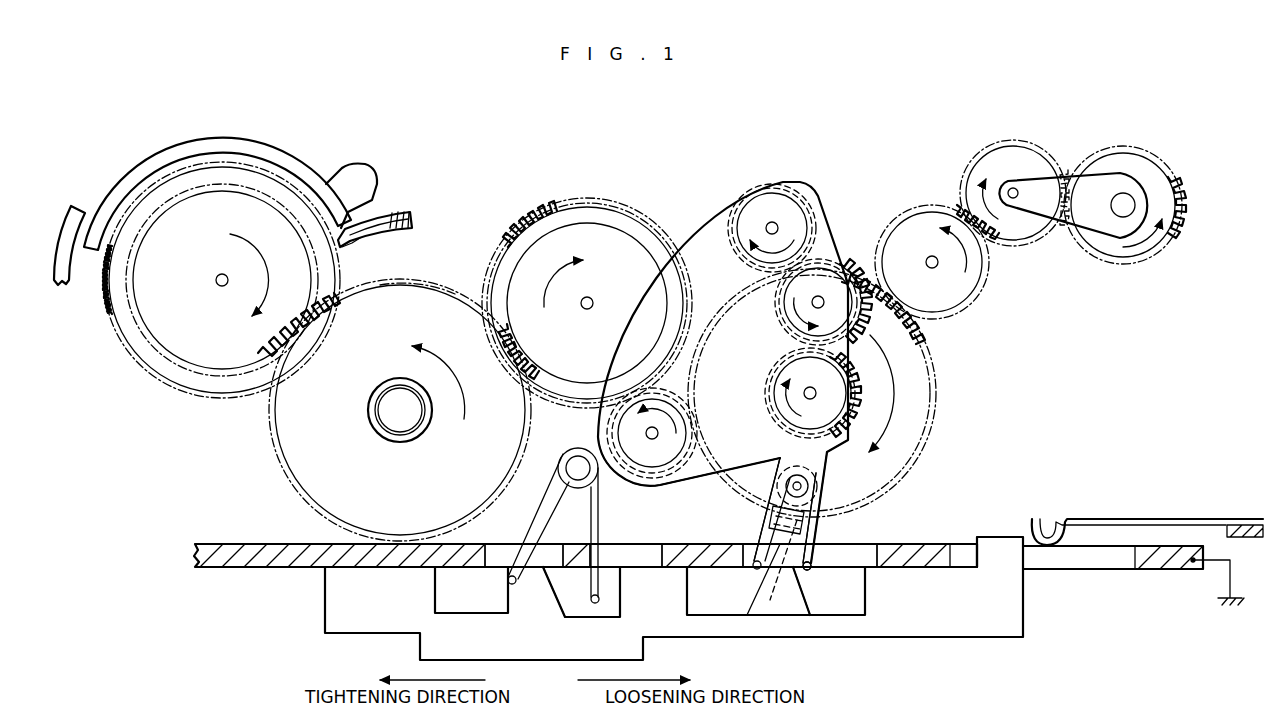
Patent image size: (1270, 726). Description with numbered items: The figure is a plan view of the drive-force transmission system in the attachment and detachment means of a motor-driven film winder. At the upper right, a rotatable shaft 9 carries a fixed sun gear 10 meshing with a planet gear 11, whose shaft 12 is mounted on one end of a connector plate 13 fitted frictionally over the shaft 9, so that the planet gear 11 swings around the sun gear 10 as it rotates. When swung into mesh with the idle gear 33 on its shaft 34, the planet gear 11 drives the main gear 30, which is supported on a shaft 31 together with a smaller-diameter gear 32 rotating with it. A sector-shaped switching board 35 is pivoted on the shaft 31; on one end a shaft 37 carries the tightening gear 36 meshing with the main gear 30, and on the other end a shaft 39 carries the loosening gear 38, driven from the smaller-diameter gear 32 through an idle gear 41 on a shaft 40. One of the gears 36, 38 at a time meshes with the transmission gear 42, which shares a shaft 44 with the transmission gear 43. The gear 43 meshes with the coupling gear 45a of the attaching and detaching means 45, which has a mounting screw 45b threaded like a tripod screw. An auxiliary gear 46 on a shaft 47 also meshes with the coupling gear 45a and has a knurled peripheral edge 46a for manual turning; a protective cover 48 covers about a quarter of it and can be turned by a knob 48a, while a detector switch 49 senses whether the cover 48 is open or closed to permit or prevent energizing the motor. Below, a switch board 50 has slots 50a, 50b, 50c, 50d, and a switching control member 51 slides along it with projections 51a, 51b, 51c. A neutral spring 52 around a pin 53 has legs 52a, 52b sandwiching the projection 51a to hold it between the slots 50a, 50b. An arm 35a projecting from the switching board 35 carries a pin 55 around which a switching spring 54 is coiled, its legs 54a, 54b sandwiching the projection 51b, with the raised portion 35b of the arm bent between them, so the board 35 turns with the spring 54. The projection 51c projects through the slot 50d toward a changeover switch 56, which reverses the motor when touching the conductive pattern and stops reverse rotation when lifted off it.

The rotatable shaft 9 is at (1135, 200).
The sun gear 10 is at (1188, 203).
The planet gear 11 is at (988, 155).
The shaft 12 is at (1040, 278).
The connector plate 13 is at (1088, 165).
The main gear 30 is at (934, 395).
The shaft 31 is at (815, 388).
The smaller-diameter gear 32 is at (855, 385).
The idle gear 33 is at (928, 215).
The shaft 34 is at (927, 259).
The sector-shaped switching board 35 is at (707, 211).
The arm 35a is at (818, 467).
The raised portion 35b is at (778, 583).
The tightening gear 36 is at (670, 478).
The shaft 37 is at (656, 437).
The loosening gear 38 is at (765, 192).
The shaft 39 is at (780, 218).
The shaft 40 is at (821, 307).
The idle gear 41 is at (845, 270).
The transmission gear 42 is at (515, 235).
The transmission gear 43 is at (620, 225).
The shaft 44 is at (584, 310).
The means for attaching and detaching 45 is at (252, 440).
The coupling gear 45a is at (428, 290).
The mounting screw 45b is at (400, 438).
The auxiliary gear 46 is at (172, 342).
The knurled peripheral edge 46a is at (108, 312).
The shaft 47 is at (218, 285).
The protective cover 48 is at (246, 147).
The knob 48a is at (362, 168).
The detector switch 49 is at (388, 208).
The switch board 50 is at (270, 570).
The slot 50a is at (503, 548).
The slot 50b is at (627, 548).
The slot 50c is at (860, 548).
The slot 50d is at (1108, 565).
The switching control member 51 is at (918, 627).
The projection 51a is at (540, 603).
The projection 51b is at (812, 600).
The projection 51c is at (1010, 550).
The neutral spring 52 is at (561, 455).
The leg 52a is at (506, 580).
The leg 52b is at (605, 582).
The pin 53 is at (580, 456).
The switching spring 54 is at (793, 475).
The leg 54a is at (760, 545).
The leg 54b is at (812, 568).
The pin 55 is at (810, 488).
The changeover switch 56 is at (1105, 518).